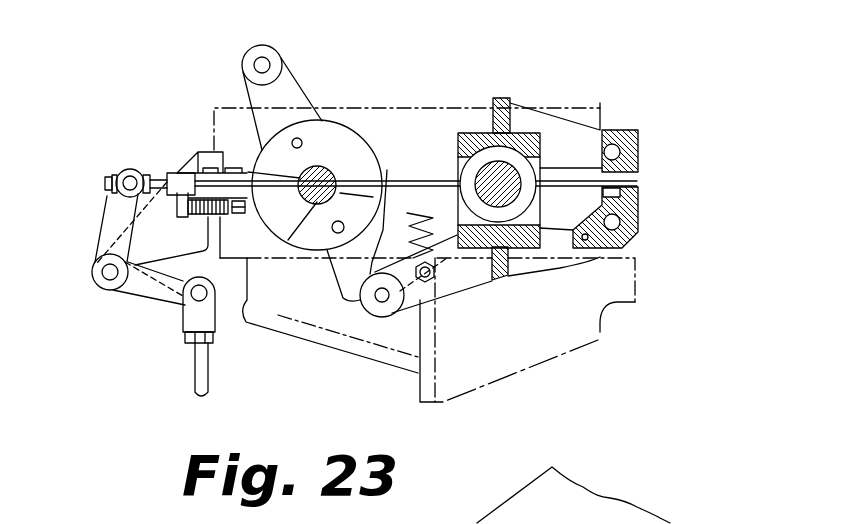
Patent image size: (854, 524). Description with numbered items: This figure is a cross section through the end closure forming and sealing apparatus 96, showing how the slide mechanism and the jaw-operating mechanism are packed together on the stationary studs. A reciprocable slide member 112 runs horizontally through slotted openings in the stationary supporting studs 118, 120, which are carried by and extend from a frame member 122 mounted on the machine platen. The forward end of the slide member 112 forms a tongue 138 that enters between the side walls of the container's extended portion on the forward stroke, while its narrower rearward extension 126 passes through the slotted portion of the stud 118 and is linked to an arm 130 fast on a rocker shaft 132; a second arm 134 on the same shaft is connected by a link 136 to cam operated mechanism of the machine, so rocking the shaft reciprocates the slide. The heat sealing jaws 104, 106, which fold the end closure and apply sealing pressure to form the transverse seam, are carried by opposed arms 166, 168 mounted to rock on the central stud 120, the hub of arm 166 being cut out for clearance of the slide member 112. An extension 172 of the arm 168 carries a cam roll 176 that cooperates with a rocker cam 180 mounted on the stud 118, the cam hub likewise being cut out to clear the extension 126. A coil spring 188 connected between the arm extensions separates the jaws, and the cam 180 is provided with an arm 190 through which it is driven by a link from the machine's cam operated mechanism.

The end closure forming and sealing apparatus 96 is at (689, 101).
The heat sealing jaw 104 is at (637, 162).
The heat sealing jaw 106 is at (637, 195).
The slide member 112 is at (443, 183).
The supporting stud 118 is at (320, 167).
The supporting stud 120 is at (483, 173).
The frame member 122 is at (567, 105).
The extension 126 is at (283, 186).
The arm 130 is at (108, 222).
The rocker shaft 132 is at (105, 280).
The second arm 134 is at (162, 298).
The link 136 is at (195, 377).
The tongue 138 is at (608, 190).
The arm 166 is at (580, 120).
The arm 168 is at (560, 270).
The extension 172 is at (463, 283).
The cam roll 176 is at (382, 312).
The rocker cam 180 is at (343, 278).
The coil spring 188 is at (418, 214).
The arm 190 is at (300, 97).